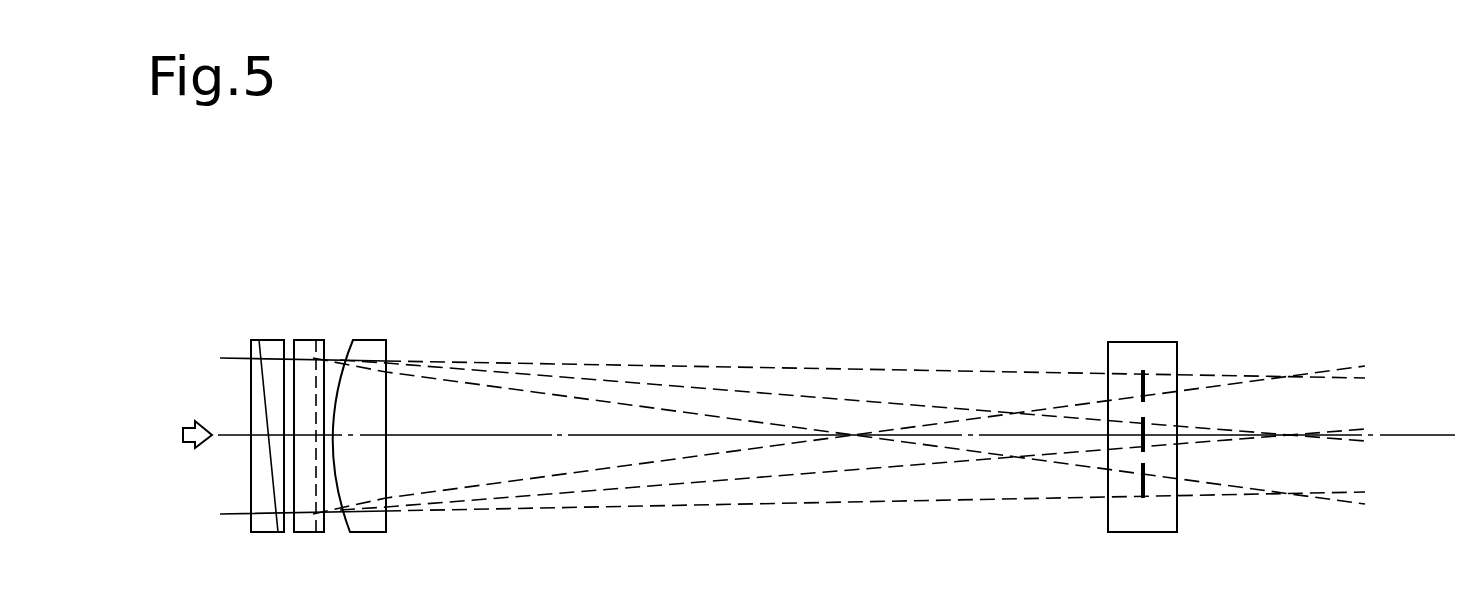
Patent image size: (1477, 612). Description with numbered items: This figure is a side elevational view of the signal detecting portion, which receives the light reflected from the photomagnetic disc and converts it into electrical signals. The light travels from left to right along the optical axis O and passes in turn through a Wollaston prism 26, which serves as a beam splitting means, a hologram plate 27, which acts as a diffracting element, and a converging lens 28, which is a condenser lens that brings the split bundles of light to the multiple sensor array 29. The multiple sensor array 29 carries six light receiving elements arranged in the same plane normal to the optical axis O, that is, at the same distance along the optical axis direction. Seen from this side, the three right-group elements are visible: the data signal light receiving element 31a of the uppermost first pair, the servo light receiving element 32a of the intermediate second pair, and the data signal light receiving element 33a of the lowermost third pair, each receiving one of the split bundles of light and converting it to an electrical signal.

The Wollaston prism 26 is at (274, 340).
The hologram plate 27 is at (310, 340).
The converging lens 28 is at (367, 340).
The multiple sensor array 29 is at (1142, 342).
The data signal light receiving element 31a is at (1147, 370).
The servo light receiving element 32a is at (1146, 417).
The data signal light receiving element 33a is at (1145, 498).
The optical axis O is at (1403, 435).